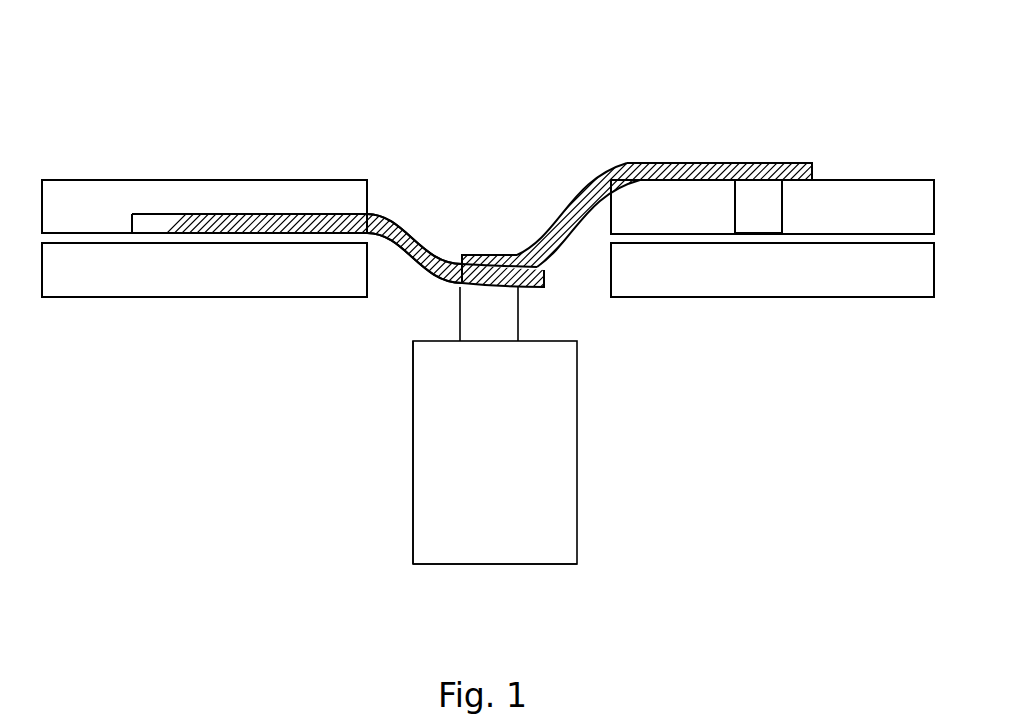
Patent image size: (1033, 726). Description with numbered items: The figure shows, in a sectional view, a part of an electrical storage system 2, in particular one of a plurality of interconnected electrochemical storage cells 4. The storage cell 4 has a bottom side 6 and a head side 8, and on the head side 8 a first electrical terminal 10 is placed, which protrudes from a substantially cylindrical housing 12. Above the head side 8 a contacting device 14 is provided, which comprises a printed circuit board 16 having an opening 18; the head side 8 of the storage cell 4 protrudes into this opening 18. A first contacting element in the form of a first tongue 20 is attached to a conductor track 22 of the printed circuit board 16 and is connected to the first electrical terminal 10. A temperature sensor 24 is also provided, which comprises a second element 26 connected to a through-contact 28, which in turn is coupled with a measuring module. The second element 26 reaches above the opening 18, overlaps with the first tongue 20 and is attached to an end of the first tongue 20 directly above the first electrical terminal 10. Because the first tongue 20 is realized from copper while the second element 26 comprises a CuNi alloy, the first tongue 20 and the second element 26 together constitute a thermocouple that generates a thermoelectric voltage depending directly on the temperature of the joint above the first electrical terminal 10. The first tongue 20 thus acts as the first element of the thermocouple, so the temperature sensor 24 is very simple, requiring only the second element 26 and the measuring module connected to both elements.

The electrical storage system 2 is at (553, 105).
The electrochemical storage cell 4 is at (557, 428).
The bottom side 6 is at (440, 580).
The head side 8 is at (597, 312).
The first electrical terminal 10 is at (473, 312).
The housing 12 is at (412, 433).
The contacting device 14 is at (847, 130).
The printed circuit board 16 is at (105, 175).
The opening 18 is at (378, 163).
The first tongue 20 is at (397, 211).
The conductor track 22 is at (128, 243).
The temperature sensor 24 is at (658, 118).
The second element 26 is at (573, 212).
The through-contact 28 is at (757, 223).